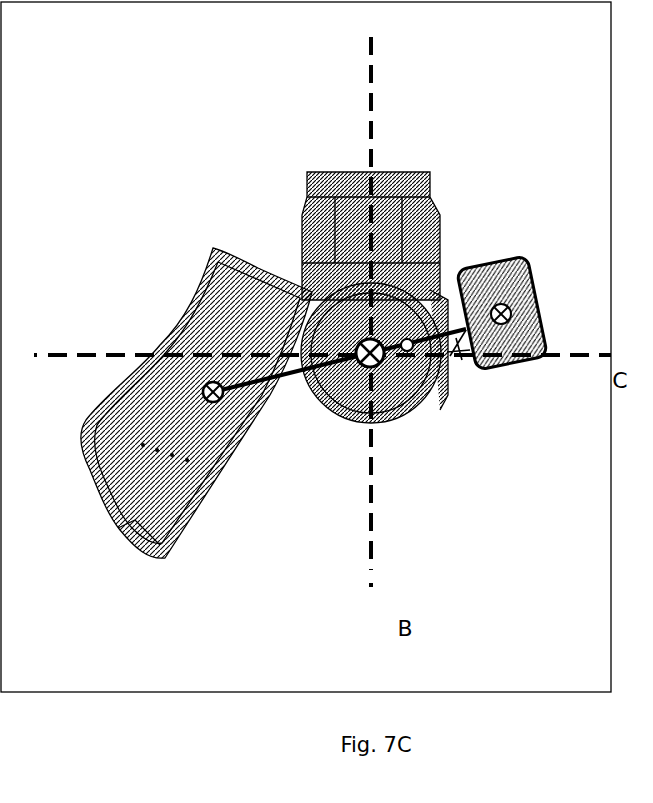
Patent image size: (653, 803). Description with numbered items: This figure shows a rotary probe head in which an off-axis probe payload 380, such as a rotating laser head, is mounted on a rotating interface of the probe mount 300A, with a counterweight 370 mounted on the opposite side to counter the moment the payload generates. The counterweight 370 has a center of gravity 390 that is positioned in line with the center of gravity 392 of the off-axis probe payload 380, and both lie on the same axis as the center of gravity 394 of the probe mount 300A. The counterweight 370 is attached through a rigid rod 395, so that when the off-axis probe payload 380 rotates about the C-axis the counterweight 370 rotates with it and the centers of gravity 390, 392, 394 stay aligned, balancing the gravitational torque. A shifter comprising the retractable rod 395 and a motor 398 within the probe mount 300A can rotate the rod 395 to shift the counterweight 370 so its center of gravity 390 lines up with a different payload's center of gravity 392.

The actuator body 300A is at (393, 418).
The counterweight 370 is at (534, 312).
The off-axis probe payload 380 is at (195, 332).
The center of gravity 390 is at (519, 259).
The center of gravity 392 is at (210, 402).
The center of gravity 394 is at (359, 366).
The rigid rod 395 is at (462, 362).
The motor 398 is at (412, 340).